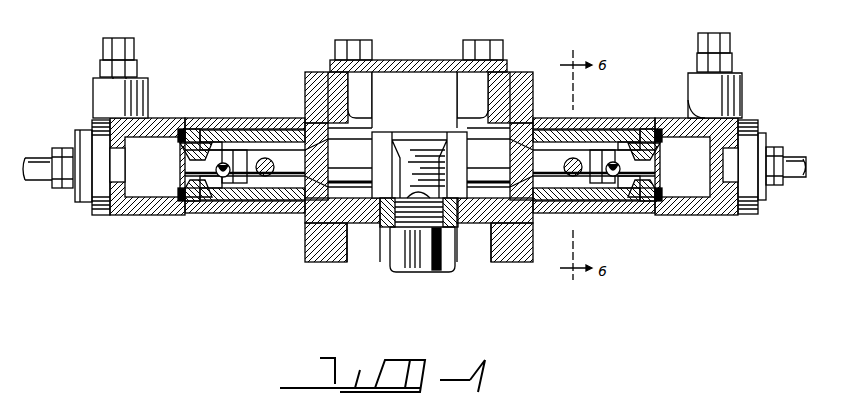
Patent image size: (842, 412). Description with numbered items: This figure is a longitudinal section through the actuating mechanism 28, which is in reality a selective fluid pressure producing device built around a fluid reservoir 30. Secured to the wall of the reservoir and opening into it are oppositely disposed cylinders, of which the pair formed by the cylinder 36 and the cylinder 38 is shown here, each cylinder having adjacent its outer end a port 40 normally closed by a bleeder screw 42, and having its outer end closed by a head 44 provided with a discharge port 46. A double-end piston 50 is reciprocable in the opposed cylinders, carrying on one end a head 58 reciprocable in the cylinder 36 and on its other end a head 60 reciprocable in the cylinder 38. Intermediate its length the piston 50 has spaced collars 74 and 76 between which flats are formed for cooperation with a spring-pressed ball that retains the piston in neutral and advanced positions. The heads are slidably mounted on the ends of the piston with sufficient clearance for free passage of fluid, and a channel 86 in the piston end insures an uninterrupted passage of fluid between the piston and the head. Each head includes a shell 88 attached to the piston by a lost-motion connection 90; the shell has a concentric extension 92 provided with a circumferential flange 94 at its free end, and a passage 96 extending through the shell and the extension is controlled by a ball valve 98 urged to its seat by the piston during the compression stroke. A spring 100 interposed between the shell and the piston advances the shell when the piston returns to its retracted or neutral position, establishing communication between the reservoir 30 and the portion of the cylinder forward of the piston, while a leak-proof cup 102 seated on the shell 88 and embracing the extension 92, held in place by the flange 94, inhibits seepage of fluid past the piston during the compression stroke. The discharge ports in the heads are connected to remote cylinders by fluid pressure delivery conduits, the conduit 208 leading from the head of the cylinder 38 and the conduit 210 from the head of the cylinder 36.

The actuating mechanism 28 is at (427, 50).
The fluid reservoir 30 is at (392, 85).
The cylinder 36 is at (137, 217).
The cylinder 38 is at (650, 118).
The port 40 is at (112, 119).
The bleeder screw 42 is at (135, 62).
The head 44 is at (80, 215).
The discharge port 46 is at (112, 163).
The double-end piston 50 is at (338, 262).
The head 58 is at (236, 205).
The head 60 is at (617, 200).
The collar 74 is at (377, 227).
The collar 76 is at (460, 223).
The channel 86 is at (275, 130).
The shell 88 is at (232, 140).
The lost-motion connection 90 is at (270, 196).
The concentric extension 92 is at (200, 196).
The circumferential flange 94 is at (190, 205).
The passage 96 is at (185, 187).
The ball valve 98 is at (208, 128).
The spring 100 is at (245, 145).
The leak-proof cup 102 is at (215, 212).
The fluid pressure delivery conduit 208 is at (800, 178).
The fluid pressure delivery conduit 210 is at (36, 182).